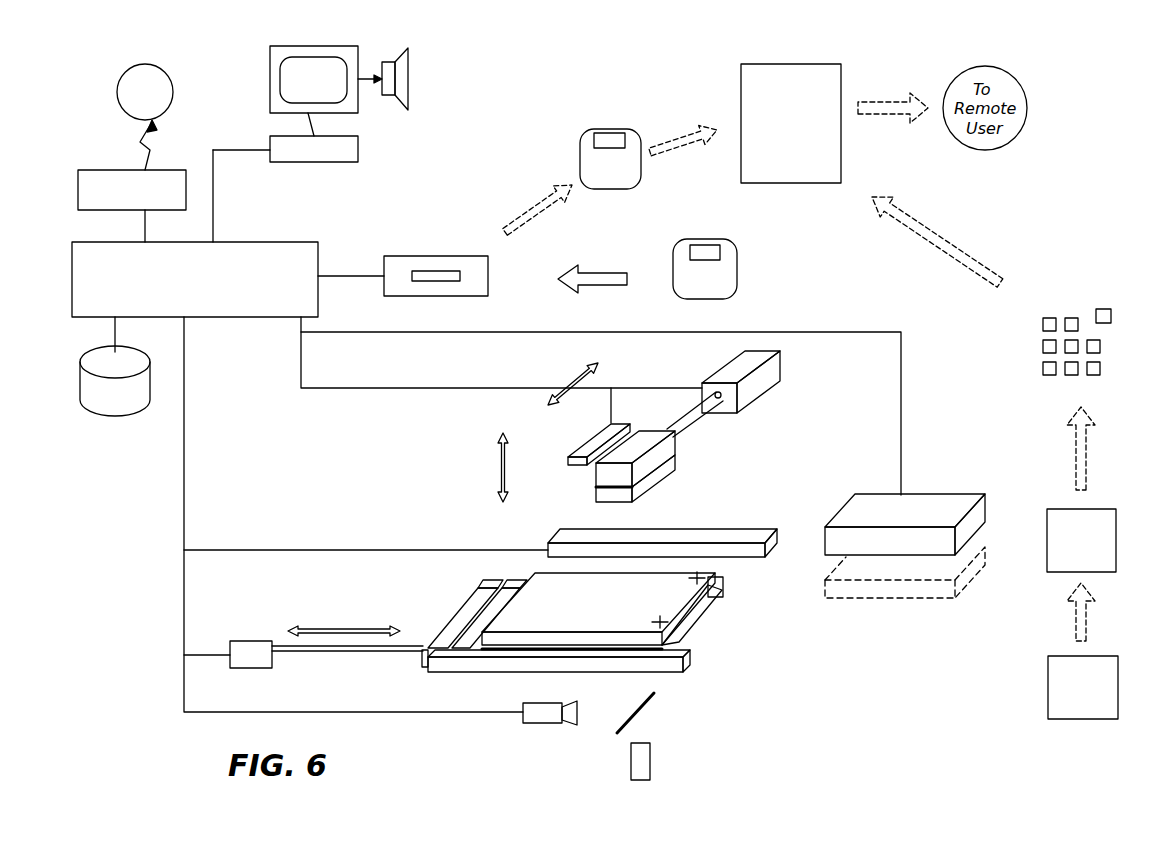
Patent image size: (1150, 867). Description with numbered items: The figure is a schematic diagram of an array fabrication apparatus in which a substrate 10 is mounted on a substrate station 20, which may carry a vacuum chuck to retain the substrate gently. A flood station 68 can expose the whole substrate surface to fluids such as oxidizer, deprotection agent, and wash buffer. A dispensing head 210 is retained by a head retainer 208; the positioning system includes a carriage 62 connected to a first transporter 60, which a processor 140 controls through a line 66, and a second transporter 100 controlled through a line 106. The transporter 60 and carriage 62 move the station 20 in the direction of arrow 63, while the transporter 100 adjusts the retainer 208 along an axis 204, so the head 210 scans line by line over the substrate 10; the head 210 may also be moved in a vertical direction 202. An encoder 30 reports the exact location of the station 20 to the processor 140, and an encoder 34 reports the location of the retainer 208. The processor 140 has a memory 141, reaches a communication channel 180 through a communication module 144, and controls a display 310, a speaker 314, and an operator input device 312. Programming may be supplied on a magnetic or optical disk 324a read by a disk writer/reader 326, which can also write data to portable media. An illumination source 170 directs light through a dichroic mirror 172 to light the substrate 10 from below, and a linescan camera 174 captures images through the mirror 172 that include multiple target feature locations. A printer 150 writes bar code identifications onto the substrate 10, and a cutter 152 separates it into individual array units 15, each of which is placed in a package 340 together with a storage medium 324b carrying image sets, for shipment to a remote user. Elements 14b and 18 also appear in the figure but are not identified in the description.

The substrate 10 is at (888, 600).
The die grid 14b is at (1043, 346).
The array unit 15 is at (1105, 309).
The fiducial marks 18 is at (697, 586).
The substrate station 20 is at (540, 672).
The encoder 30 is at (740, 557).
The encoder 34 is at (568, 462).
The first transporter 60 is at (252, 640).
The carriage 62 is at (397, 655).
The arrow 63 is at (328, 627).
The line 66 is at (184, 508).
The flood station 68 is at (840, 512).
The second transporter 100 is at (760, 390).
The line 106 is at (372, 388).
The processor 140 is at (195, 279).
The memory 141 is at (106, 416).
The communication module 144 is at (115, 170).
The printer 150 is at (1083, 687).
The cutter 152 is at (1081, 540).
The illumination source 170 is at (650, 757).
The dichroic mirror 172 is at (642, 707).
The linescan camera 174 is at (540, 723).
The communication channel 180 is at (128, 70).
The vertical direction 202 is at (498, 470).
The axis 204 is at (572, 383).
The head retainer 208 is at (660, 448).
The dispensing head 210 is at (596, 494).
The display 310 is at (270, 78).
The operator input device 312 is at (340, 162).
The speaker 314 is at (408, 70).
The magnetic or optical disk 324a is at (704, 239).
The storage medium 324b is at (618, 129).
The disk writer/reader 326 is at (470, 256).
The package 340 is at (791, 123).